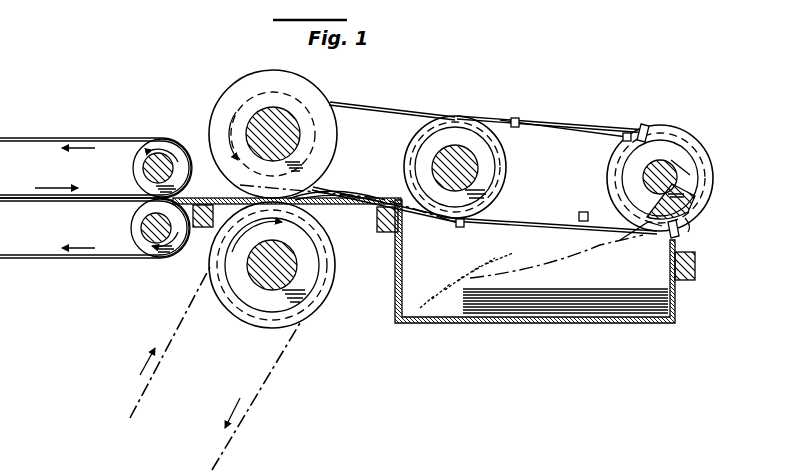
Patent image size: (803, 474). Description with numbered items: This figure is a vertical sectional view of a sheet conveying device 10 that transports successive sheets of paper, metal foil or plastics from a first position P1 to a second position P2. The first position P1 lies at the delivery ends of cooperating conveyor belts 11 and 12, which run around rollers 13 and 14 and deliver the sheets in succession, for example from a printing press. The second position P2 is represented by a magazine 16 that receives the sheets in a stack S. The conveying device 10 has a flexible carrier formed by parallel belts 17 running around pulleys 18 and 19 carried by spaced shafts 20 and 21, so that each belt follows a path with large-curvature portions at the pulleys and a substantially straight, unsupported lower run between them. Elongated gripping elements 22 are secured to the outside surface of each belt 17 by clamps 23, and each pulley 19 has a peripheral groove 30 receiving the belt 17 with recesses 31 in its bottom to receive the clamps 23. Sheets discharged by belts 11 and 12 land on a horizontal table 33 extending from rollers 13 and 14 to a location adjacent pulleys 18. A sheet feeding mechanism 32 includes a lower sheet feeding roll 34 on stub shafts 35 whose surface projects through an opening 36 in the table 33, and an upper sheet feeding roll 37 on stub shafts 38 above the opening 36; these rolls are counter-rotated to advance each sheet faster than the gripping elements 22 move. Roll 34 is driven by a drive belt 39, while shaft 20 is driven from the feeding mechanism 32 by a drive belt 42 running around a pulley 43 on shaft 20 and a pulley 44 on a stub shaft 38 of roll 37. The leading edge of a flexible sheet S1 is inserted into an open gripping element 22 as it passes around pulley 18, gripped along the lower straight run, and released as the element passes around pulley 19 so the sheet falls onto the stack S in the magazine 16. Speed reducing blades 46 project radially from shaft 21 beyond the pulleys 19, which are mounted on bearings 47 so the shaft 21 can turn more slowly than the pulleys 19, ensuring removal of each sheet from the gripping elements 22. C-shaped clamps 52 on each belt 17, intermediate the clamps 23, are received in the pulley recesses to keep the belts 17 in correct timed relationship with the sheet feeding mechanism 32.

The sheet conveying device 10 is at (517, 100).
The conveyor belt 11 is at (40, 138).
The conveyor belt 12 is at (64, 258).
The roller 13 is at (143, 168).
The roller 14 is at (141, 228).
The magazine 16 is at (445, 324).
The belt 17 is at (535, 224).
The pulley 18 is at (504, 178).
The pulley 19 is at (650, 175).
The shaft 20 is at (425, 178).
The shaft 21 is at (672, 163).
The gripping element 22 is at (525, 120).
The clamp 23 is at (700, 203).
The peripheral groove 30 is at (700, 193).
The recess 31 is at (640, 226).
The sheet feeding mechanism 32 is at (270, 60).
The table 33 is at (362, 206).
The lower sheet feeding roll 34 is at (258, 320).
The stub shaft 35 is at (298, 270).
The opening 36 is at (300, 206).
The upper sheet feeding roll 37 is at (305, 92).
The stub shaft 38 is at (288, 140).
The drive belt 39 is at (246, 410).
The drive belt 42 is at (372, 112).
The pulley 43 is at (464, 118).
The pulley 44 is at (240, 84).
The speed reducing blade 46 is at (650, 126).
The bearing 47 is at (680, 185).
The C-shaped clamp 52 is at (623, 142).
The first position P1 is at (198, 194).
The second position P2 is at (548, 324).
The stack S is at (625, 305).
The flexible sheet S1 is at (352, 186).